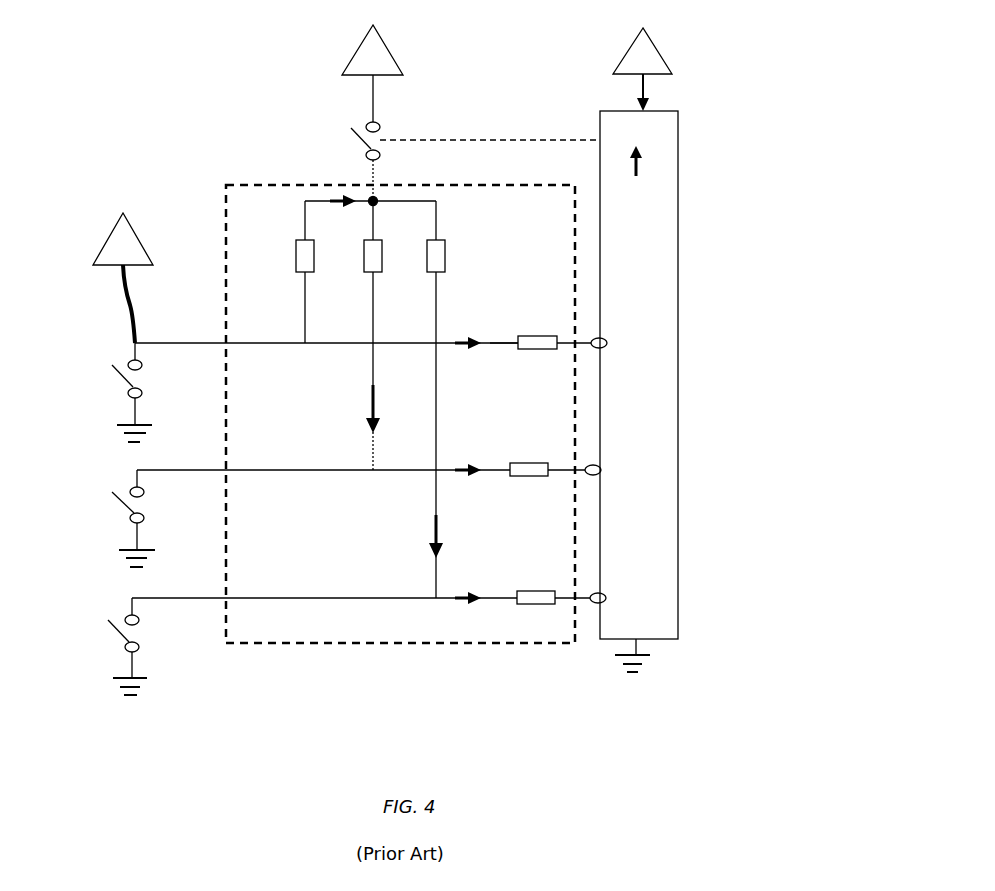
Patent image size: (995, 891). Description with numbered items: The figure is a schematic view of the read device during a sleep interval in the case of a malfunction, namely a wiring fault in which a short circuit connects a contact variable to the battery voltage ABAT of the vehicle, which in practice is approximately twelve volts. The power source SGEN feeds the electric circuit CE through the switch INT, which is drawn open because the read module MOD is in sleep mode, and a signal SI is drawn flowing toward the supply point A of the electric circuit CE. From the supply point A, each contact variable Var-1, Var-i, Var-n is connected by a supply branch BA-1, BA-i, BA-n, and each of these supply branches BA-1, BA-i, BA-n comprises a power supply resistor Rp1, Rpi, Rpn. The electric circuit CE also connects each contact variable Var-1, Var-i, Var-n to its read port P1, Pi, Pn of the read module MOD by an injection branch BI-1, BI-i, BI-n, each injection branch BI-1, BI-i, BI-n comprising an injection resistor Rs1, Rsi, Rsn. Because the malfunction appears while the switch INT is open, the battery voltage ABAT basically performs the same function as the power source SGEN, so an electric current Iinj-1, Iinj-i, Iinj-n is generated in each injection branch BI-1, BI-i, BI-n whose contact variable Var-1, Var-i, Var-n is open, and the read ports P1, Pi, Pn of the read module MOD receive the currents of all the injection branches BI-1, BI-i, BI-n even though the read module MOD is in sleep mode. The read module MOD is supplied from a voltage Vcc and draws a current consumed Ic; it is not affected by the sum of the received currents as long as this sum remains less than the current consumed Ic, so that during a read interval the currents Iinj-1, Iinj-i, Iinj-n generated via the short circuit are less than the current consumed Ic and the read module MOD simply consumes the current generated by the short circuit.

The power source SGEN is at (372, 61).
The switch INT is at (452, 160).
The electric circuit CE is at (327, 648).
The supply point A is at (380, 211).
The injection signal SI is at (370, 214).
The supply branch BA-n is at (303, 229).
The supply branch BA-i is at (372, 375).
The supply branch BA-1 is at (435, 499).
The power supply resistor Rpn is at (288, 270).
The power supply resistor Rpi is at (360, 270).
The power supply resistor Rp1 is at (423, 270).
The electric current Iinj-n is at (326, 359).
The electric current Iinj-i is at (348, 409).
The electric current Iinj-1 is at (408, 536).
The injection branch BI-n is at (492, 343).
The injection branch BI-i is at (485, 470).
The injection branch BI-1 is at (486, 598).
The injection resistor Rsn is at (552, 358).
The injection resistor Rsi is at (547, 485).
The injection resistor Rs1 is at (553, 614).
The read port Pn is at (610, 343).
The read port Pi is at (607, 471).
The read port P1 is at (612, 599).
The read module MOD is at (639, 391).
The supply voltage Vcc is at (642, 39).
The current consumed Ic is at (650, 92).
The battery voltage ABAT is at (123, 266).
The contact variable Var-n is at (106, 392).
The contact variable Var-i is at (108, 518).
The contact variable Var-1 is at (102, 646).